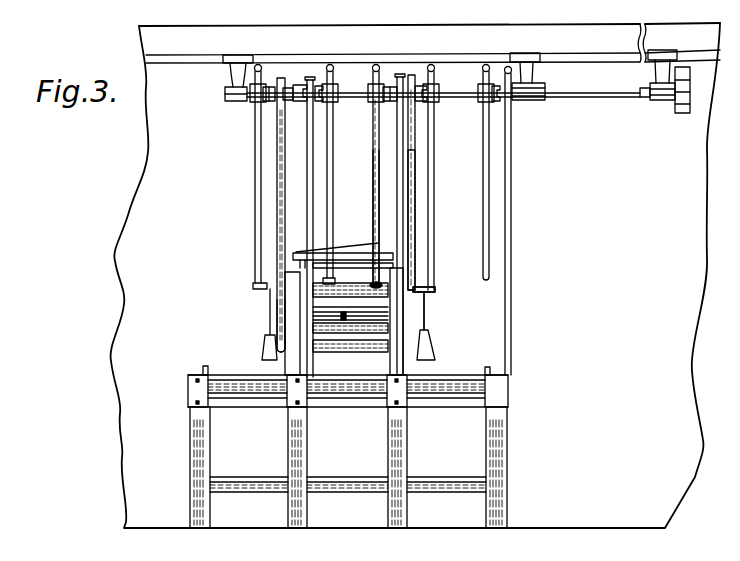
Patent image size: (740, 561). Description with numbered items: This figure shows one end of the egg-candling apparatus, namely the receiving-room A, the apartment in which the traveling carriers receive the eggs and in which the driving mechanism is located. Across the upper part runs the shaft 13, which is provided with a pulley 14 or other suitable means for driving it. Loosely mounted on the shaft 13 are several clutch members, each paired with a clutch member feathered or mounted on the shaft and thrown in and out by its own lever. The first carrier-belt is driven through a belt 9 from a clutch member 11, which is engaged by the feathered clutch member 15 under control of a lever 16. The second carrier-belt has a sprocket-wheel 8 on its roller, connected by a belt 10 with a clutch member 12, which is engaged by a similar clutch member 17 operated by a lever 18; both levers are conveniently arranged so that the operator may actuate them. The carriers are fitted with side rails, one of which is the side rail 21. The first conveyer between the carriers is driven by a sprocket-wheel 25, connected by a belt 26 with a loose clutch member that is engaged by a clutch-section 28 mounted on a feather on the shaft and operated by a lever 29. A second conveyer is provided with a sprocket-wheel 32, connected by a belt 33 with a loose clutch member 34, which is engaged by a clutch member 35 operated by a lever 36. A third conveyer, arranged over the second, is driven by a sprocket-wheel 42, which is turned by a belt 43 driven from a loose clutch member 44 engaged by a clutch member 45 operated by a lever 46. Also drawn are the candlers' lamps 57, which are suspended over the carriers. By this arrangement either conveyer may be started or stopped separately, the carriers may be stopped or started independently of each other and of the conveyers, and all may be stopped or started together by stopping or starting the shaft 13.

The receiving-room A is at (415, 275).
The sprocket-wheel 8 is at (509, 397).
The belt 9 is at (308, 180).
The belt 10 is at (512, 210).
The clutch member 11 is at (300, 103).
The clutch member 12 is at (518, 102).
The shaft 13 is at (358, 93).
The pulley 14 is at (672, 113).
The clutch member 15 is at (336, 102).
The lever 16 is at (333, 194).
The clutch member 17 is at (482, 97).
The lever 18 is at (483, 206).
The side rail 21 is at (398, 102).
The sprocket-wheel 25 is at (392, 402).
The belt 26 is at (397, 196).
The clutch-section 28 is at (337, 108).
The lever 29 is at (373, 160).
The sprocket-wheel 32 is at (279, 335).
The belt 33 is at (280, 245).
The clutch member 34 is at (294, 88).
The clutch member 35 is at (250, 103).
The lever 36 is at (255, 180).
The sprocket-wheel 42 is at (426, 300).
The belt 43 is at (409, 182).
The clutch member 44 is at (414, 105).
The clutch member 45 is at (438, 100).
The lever 46 is at (436, 143).
The candlers' lamp 57 is at (262, 347).